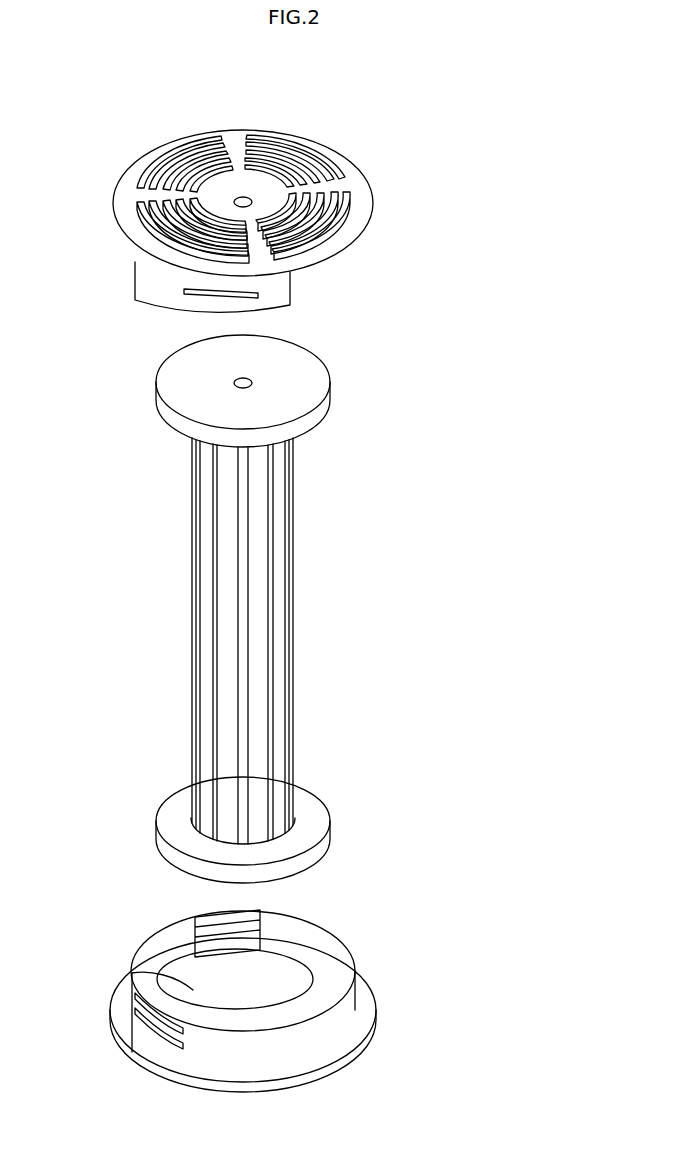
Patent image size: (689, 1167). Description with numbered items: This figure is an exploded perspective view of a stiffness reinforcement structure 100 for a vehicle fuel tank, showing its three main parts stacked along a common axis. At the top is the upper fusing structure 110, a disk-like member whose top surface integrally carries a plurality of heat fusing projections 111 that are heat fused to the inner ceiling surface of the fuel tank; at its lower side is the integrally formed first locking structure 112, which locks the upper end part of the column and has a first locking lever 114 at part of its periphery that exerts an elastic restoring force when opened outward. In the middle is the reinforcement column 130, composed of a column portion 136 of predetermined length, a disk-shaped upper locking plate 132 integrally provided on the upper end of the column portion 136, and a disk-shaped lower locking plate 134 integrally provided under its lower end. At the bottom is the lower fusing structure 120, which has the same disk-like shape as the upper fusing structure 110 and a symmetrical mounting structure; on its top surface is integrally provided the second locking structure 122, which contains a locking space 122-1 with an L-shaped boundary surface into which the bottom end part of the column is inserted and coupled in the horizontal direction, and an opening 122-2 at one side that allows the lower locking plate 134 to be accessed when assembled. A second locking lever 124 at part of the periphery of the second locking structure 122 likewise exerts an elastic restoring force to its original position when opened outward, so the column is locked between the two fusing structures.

The stiffness reinforcement structure 100 is at (523, 195).
The upper fusing structure 110 is at (290, 213).
The heat fusing projections 111 is at (338, 153).
The first locking structure 112 is at (152, 277).
The first locking lever 114 is at (286, 284).
The reinforcement column 130 is at (287, 609).
The upper locking plate 132 is at (168, 390).
The lower locking plate 134 is at (313, 803).
The column portion 136 is at (283, 479).
The lower fusing structure 120 is at (275, 983).
The second locking structure 122 is at (340, 1017).
The locking space 122-1 is at (262, 940).
The opening 122-2 is at (170, 968).
The second locking lever 124 is at (137, 1017).